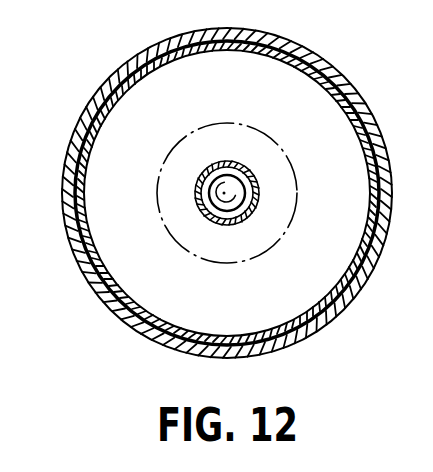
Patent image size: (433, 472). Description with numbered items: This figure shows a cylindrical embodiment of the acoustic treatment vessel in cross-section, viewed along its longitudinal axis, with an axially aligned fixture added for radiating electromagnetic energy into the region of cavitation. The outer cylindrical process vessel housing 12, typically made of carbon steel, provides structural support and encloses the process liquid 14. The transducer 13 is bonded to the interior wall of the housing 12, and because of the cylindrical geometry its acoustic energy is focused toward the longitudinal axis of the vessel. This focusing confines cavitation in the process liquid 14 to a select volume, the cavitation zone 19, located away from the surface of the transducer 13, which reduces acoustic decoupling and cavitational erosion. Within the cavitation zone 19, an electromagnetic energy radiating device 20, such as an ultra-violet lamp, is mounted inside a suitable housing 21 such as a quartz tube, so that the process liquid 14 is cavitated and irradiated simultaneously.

The cylindrical process vessel housing 12 is at (88, 106).
The transducer 13 is at (247, 57).
The process liquid 14 is at (232, 298).
The cavitation zone 19 is at (279, 143).
The electromagnetic energy radiating device 20 is at (213, 188).
The housing 21 is at (203, 175).